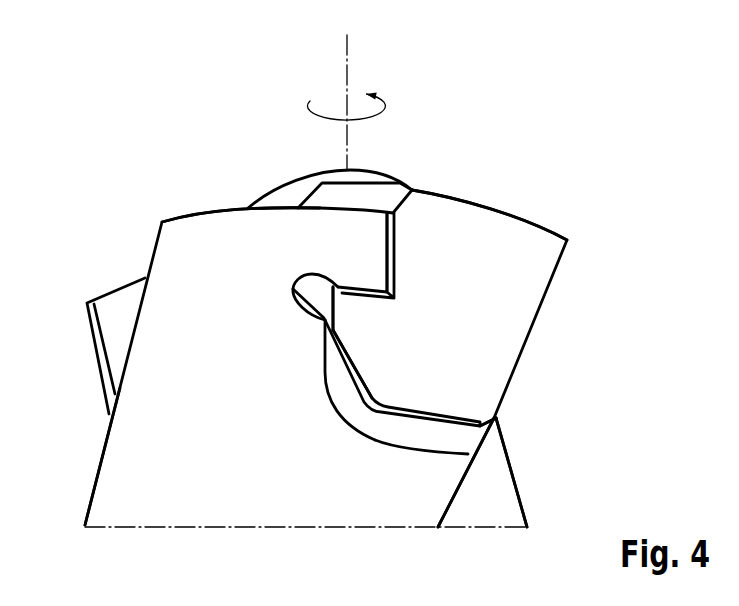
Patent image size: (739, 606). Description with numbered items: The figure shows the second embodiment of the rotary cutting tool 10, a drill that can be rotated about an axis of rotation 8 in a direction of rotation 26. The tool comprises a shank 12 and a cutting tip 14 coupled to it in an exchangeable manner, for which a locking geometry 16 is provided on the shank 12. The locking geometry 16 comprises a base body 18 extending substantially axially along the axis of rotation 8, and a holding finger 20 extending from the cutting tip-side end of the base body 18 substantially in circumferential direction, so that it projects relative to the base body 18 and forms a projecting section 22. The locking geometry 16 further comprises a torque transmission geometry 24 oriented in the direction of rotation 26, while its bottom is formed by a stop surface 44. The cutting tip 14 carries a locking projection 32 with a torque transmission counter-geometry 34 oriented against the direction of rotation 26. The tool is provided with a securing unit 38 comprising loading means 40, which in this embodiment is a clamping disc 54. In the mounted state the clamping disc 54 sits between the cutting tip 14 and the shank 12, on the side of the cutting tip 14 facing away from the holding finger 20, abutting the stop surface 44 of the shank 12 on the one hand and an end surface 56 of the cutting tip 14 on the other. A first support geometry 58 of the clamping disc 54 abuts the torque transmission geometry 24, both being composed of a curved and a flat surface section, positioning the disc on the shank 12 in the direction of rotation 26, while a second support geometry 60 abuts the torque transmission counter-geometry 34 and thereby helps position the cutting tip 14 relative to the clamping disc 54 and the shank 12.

The axis of rotation 8 is at (344, 45).
The rotary cutting tool 10 is at (607, 160).
The shank 12 is at (115, 475).
The cutting tip 14 is at (513, 225).
The locking geometry 16 is at (168, 427).
The base body 18 is at (227, 308).
The holding finger 20 is at (323, 251).
The projecting section 22 is at (372, 231).
The torque transmission geometry 24 is at (322, 392).
The direction of rotation 26 is at (383, 103).
The locking projection 32 is at (353, 316).
The torque transmission counter-geometry 34 is at (352, 360).
The securing unit 38 is at (460, 435).
The loading means 40 is at (460, 435).
The stop surface 44 is at (423, 450).
The clamping disc 54 is at (460, 435).
The end surface 56 is at (441, 405).
The first support geometry 58 is at (338, 417).
The second support geometry 60 is at (360, 372).